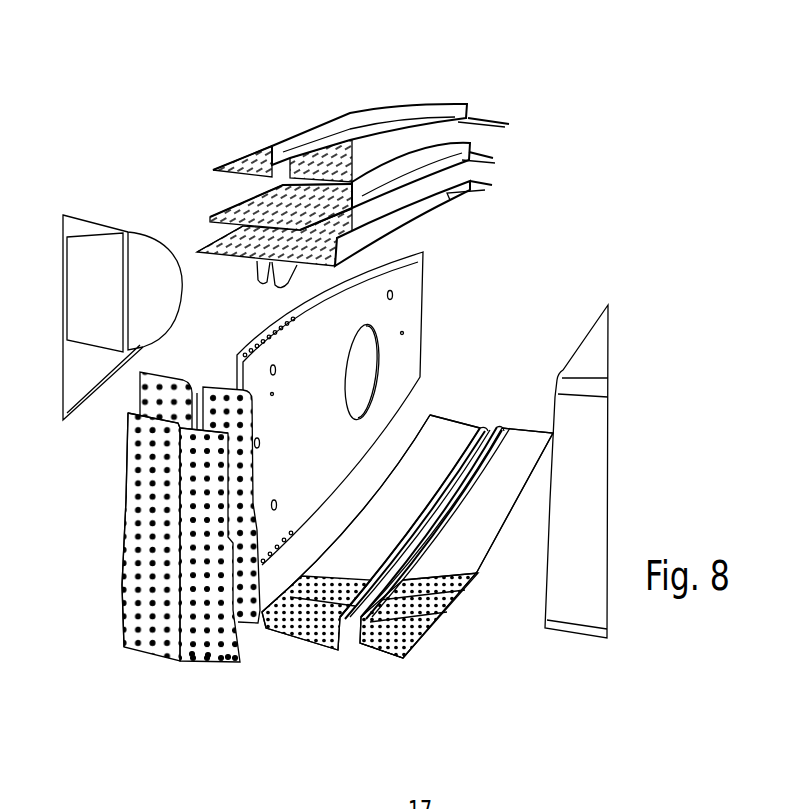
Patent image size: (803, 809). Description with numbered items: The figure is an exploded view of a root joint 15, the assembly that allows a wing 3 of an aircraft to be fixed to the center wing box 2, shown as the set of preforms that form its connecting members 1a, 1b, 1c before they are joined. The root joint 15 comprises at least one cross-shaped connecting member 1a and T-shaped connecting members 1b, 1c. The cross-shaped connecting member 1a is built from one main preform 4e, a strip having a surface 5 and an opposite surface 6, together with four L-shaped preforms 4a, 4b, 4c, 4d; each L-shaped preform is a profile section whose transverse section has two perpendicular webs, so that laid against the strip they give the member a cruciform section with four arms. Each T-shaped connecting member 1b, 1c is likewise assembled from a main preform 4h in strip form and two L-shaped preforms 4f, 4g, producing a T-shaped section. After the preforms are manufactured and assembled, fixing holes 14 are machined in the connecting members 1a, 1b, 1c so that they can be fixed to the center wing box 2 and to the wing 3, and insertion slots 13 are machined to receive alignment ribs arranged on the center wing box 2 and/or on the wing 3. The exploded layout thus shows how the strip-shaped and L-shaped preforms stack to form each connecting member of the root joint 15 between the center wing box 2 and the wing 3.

The cross-shaped connecting member 1a is at (360, 159).
The T-shaped connecting member 1b is at (407, 591).
The T-shaped connecting member 1c is at (154, 593).
The center wing box 2 is at (83, 216).
The wing 3 is at (600, 360).
The L-shaped preform 4a is at (252, 152).
The L-shaped preform 4b is at (492, 118).
The L-shaped preform 4c is at (222, 261).
The L-shaped preform 4d is at (485, 188).
The main preform 4e is at (495, 158).
The L-shaped preform 4f is at (460, 422).
The L-shaped preform 4g is at (523, 433).
The main preform 4h is at (388, 658).
The surface 5 is at (214, 200).
The surface 6 is at (207, 233).
The insertion slots 13 is at (478, 572).
The fixing holes 14 is at (192, 655).
The root joint 15 is at (422, 310).